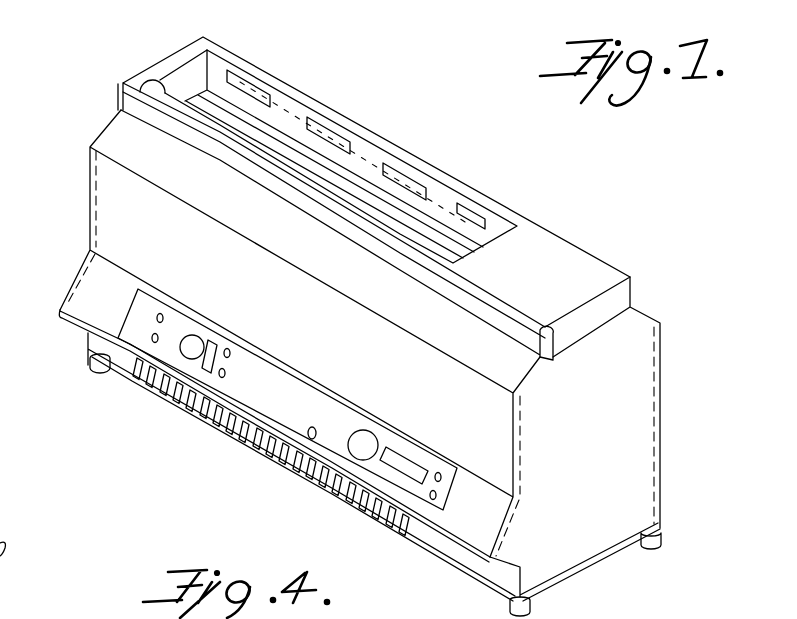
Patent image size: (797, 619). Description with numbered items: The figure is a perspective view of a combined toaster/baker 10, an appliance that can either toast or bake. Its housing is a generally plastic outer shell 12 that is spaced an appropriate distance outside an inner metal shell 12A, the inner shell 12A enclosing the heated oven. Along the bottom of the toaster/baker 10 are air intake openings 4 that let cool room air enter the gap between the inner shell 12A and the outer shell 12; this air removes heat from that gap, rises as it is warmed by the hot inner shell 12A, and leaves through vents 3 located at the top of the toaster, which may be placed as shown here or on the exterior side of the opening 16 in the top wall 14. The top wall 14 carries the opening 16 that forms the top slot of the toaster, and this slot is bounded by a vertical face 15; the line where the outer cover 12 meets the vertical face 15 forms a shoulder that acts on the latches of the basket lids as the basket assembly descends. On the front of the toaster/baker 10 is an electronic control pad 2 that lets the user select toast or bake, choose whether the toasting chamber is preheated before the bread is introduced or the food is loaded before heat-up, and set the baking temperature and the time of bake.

The toaster/baker 10 is at (661, 266).
The outer shell 12 is at (110, 216).
The inner metal shell 12A is at (187, 75).
The top wall 14 is at (497, 213).
The vertical face 15 is at (217, 70).
The vents 3 is at (465, 202).
The opening 16 is at (146, 70).
The electronic control pad 2 is at (396, 483).
The air intake openings 4 is at (327, 476).